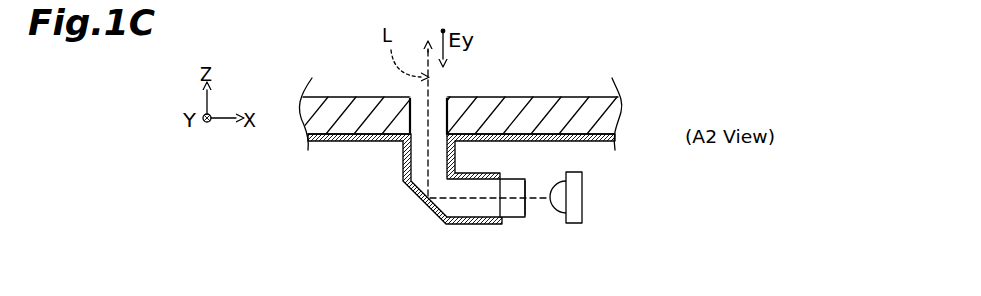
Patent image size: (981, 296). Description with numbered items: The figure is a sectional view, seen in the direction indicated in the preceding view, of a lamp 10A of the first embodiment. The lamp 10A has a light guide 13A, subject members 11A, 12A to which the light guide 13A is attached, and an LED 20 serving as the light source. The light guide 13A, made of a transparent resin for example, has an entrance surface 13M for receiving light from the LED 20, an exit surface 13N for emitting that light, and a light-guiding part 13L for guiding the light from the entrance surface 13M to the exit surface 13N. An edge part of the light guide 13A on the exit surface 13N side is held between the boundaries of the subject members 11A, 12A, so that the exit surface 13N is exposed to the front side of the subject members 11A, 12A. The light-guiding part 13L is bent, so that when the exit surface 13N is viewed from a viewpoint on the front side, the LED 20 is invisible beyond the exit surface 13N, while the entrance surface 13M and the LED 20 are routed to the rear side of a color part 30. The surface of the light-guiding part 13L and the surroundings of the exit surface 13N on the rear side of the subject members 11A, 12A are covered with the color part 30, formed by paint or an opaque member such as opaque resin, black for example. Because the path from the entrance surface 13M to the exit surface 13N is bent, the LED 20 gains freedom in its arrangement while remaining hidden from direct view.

The lamp 10A is at (471, 83).
The subject member 11A is at (341, 110).
The subject member 12A is at (571, 107).
The exit surface 13N is at (443, 90).
The light-guiding part 13L is at (459, 207).
The light guide 13A is at (512, 221).
The entrance surface 13M is at (533, 208).
The LED 20 is at (588, 204).
The color part 30 is at (361, 144).